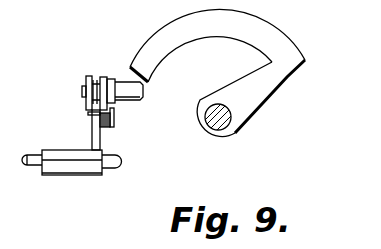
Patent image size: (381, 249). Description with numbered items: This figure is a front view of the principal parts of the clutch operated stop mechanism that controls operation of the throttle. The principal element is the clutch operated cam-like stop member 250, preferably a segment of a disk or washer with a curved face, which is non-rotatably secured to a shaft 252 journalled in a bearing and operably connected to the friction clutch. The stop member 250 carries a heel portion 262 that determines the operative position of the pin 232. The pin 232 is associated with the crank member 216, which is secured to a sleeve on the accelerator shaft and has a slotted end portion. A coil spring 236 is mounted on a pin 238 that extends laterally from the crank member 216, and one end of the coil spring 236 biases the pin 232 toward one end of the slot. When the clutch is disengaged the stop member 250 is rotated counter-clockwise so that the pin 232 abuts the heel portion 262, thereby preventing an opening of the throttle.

The stop member 250 is at (280, 25).
The heel portion 262 is at (298, 58).
The shaft 252 is at (232, 130).
The pin 232 is at (135, 100).
The pin 238 is at (92, 122).
The coil spring 236 is at (107, 125).
The crank member 216 is at (93, 135).